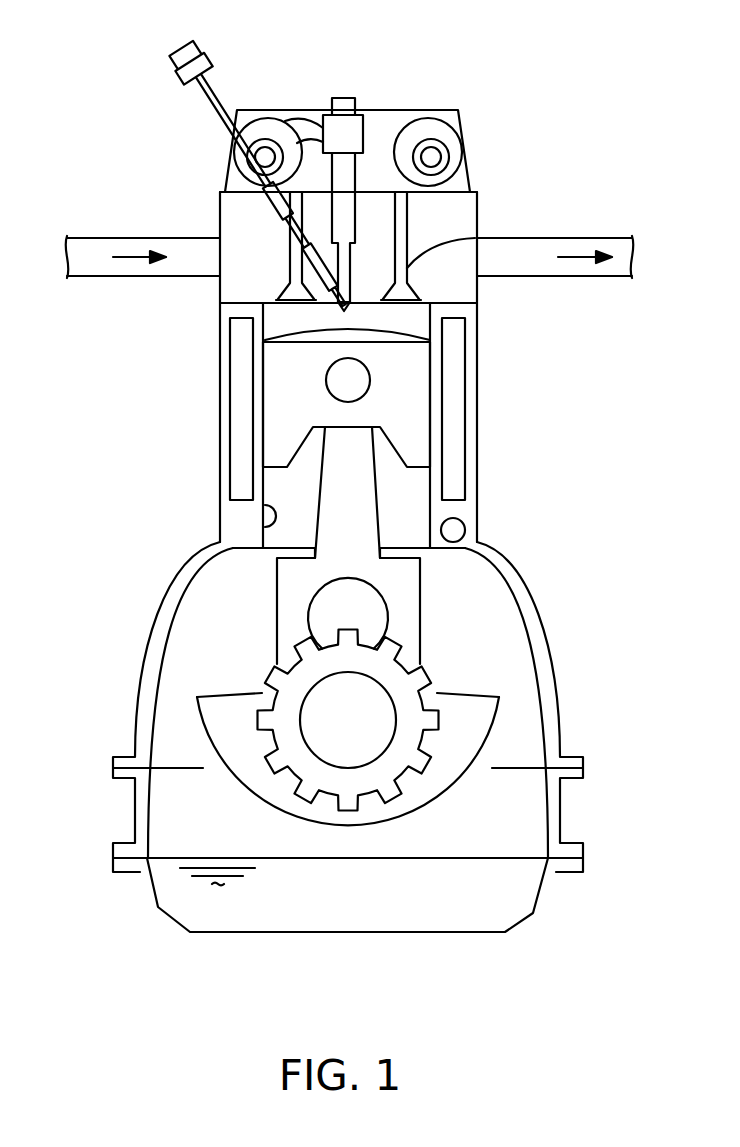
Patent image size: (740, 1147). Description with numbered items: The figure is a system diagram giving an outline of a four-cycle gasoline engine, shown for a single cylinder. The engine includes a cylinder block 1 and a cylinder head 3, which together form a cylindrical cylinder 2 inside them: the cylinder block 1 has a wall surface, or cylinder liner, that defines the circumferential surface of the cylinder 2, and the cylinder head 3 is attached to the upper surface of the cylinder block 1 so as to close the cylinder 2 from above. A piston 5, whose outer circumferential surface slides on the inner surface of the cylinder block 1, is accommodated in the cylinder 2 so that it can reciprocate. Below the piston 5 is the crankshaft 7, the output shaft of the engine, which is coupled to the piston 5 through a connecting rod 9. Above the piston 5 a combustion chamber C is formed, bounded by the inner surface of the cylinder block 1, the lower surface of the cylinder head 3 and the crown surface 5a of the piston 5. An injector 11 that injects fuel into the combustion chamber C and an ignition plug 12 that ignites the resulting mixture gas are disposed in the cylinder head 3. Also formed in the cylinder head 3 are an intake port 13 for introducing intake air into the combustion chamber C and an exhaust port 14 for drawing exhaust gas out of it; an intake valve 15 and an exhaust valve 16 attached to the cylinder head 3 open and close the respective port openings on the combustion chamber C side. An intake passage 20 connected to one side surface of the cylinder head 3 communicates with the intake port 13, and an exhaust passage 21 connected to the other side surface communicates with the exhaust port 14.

The cylinder block 1 is at (478, 498).
The cylinder 2 is at (285, 520).
The cylinder head 3 is at (478, 290).
The piston 5 is at (273, 433).
The crown surface 5a is at (318, 325).
The crankshaft 7 is at (367, 737).
The connecting rod 9 is at (287, 587).
The injector 11 is at (360, 165).
The ignition plug 12 is at (232, 145).
The intake port 13 is at (273, 300).
The exhaust port 14 is at (427, 298).
The intake valve 15 is at (290, 268).
The exhaust valve 16 is at (410, 215).
The intake passage 20 is at (93, 237).
The exhaust passage 21 is at (600, 237).
The combustion chamber C is at (418, 327).